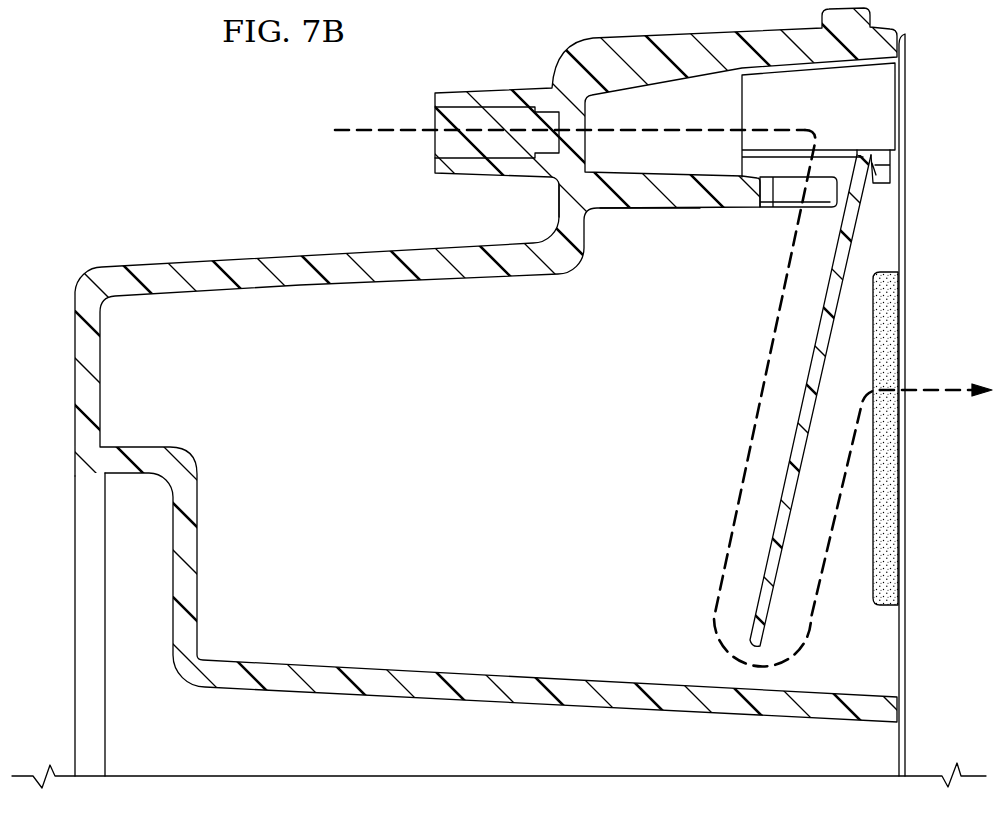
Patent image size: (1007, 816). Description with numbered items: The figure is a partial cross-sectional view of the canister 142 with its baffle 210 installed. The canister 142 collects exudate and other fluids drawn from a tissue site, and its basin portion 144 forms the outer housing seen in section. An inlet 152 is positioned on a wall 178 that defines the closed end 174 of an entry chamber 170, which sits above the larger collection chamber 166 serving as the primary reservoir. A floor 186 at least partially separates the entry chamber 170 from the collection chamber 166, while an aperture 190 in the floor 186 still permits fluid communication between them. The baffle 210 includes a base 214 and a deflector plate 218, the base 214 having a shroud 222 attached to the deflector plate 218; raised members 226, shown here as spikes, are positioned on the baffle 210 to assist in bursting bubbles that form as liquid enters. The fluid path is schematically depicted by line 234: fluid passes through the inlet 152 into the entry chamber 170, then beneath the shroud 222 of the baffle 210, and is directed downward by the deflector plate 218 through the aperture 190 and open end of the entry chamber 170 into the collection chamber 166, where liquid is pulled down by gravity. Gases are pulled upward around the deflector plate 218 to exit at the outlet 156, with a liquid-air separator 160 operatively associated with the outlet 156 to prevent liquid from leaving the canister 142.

The canister 142 is at (182, 121).
The basin portion 144 is at (184, 262).
The inlet 152 is at (460, 90).
The outlet 156 is at (905, 392).
The liquid-air separator 160 is at (872, 578).
The collection chamber 166 is at (490, 456).
The entry chamber 170 is at (691, 119).
The closed end 174 is at (592, 143).
The wall 178 is at (557, 207).
The floor 186 is at (660, 213).
The aperture 190 is at (769, 214).
The baffle 210 is at (856, 245).
The base 214 is at (905, 100).
The deflector plate 218 is at (766, 562).
The shroud 222 is at (832, 115).
The raised members 226 is at (820, 319).
The line 234 is at (378, 128).